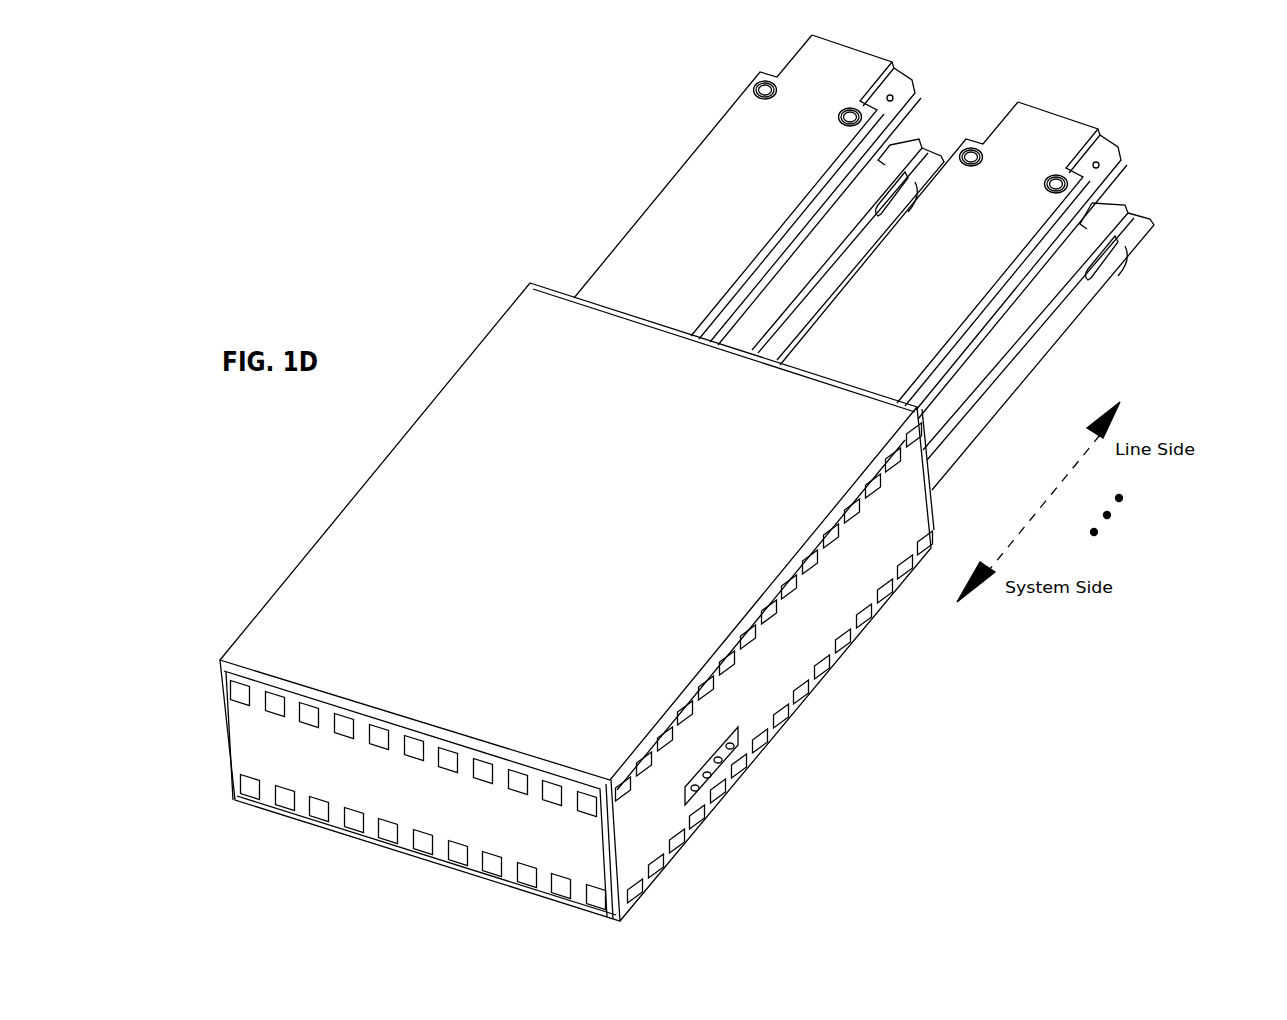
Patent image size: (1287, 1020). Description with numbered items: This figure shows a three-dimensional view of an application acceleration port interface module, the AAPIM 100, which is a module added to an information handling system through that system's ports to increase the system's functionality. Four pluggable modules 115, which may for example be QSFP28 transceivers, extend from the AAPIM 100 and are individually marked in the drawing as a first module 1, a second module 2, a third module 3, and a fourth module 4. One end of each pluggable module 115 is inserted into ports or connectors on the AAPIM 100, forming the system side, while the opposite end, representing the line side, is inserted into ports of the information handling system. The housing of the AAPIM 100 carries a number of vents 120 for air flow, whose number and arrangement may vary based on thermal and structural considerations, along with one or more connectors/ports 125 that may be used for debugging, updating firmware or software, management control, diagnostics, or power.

The pluggable module 1 is at (843, 58).
The pluggable module 2 is at (893, 145).
The pluggable module 3 is at (1050, 128).
The pluggable module 4 is at (1097, 213).
The application acceleration port interface module 100 is at (750, 602).
The pluggable modules 115 is at (705, 3).
The vents 120 is at (843, 680).
The connectors/ports 125 is at (752, 778).